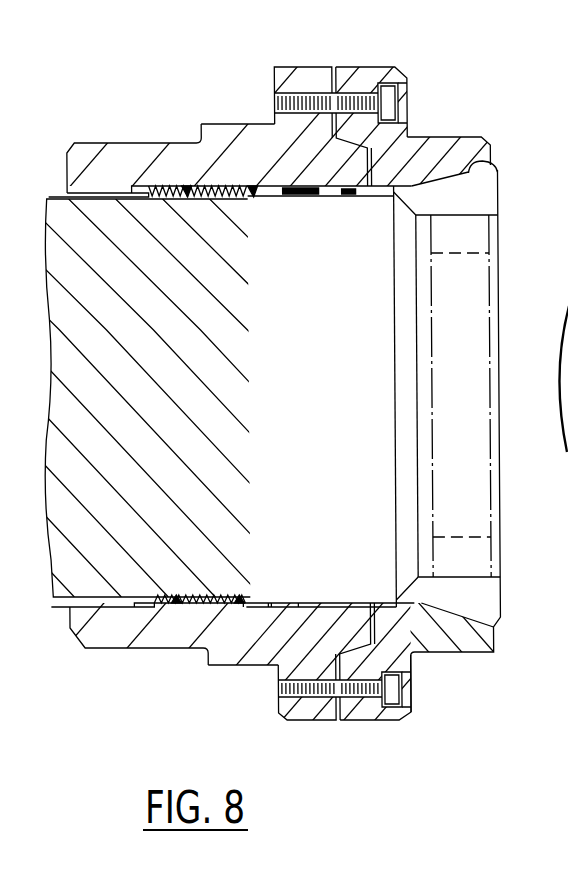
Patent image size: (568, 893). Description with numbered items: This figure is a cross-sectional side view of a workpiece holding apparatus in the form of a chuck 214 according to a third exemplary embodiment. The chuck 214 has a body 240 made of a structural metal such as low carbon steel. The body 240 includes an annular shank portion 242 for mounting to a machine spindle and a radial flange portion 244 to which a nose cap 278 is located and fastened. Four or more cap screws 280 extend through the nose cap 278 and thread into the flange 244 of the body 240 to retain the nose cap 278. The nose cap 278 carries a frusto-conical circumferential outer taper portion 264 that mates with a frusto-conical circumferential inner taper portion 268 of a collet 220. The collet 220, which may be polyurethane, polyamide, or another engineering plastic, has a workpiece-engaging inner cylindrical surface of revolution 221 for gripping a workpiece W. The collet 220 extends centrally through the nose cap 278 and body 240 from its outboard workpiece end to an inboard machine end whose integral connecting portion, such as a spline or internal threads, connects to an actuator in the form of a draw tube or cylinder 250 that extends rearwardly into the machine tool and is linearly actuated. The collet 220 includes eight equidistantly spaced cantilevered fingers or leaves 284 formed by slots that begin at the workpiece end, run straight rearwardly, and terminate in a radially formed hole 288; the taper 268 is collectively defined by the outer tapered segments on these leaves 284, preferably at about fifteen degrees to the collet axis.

The chuck 214 is at (457, 377).
The collet 220 is at (503, 193).
The workpiece-engaging surface of revolution 221 is at (458, 216).
The body 240 is at (238, 132).
The annular shank portion 242 is at (135, 153).
The radial flange portion 244 is at (312, 77).
The draw tube or cylinder 250 is at (57, 196).
The circumferential outer taper portion 264 is at (485, 190).
The circumferential inner taper portion 268 is at (462, 167).
The nose cap 278 is at (372, 62).
The cap screws 280 is at (393, 98).
The cantilevered fingers or leaves 284 is at (481, 194).
The hole 288 is at (348, 198).
The workpiece W is at (497, 248).